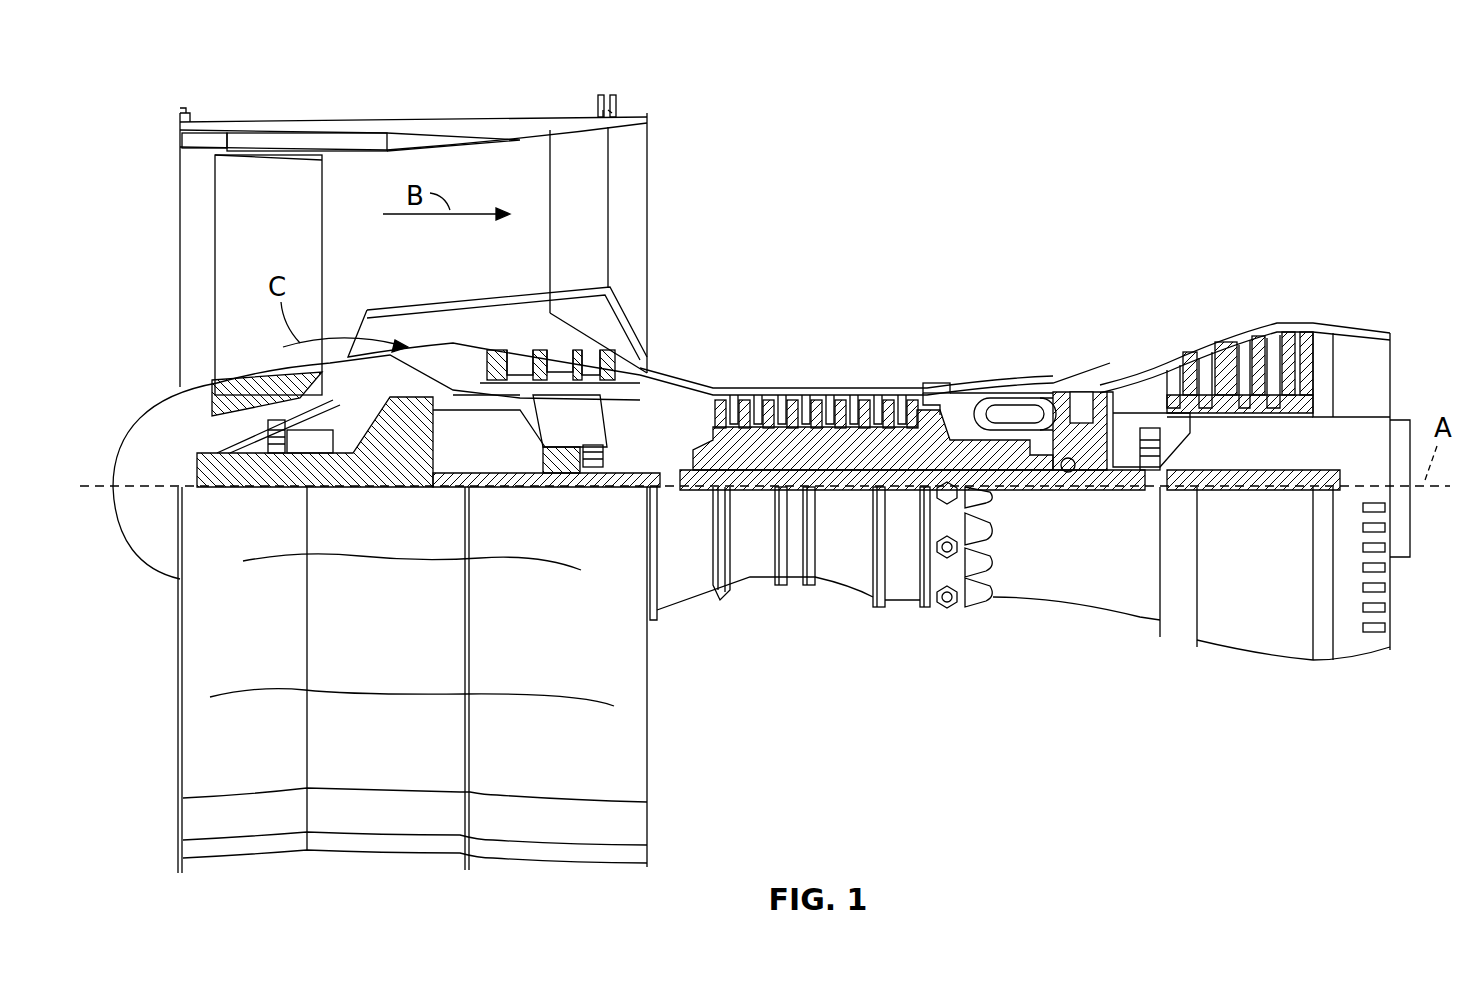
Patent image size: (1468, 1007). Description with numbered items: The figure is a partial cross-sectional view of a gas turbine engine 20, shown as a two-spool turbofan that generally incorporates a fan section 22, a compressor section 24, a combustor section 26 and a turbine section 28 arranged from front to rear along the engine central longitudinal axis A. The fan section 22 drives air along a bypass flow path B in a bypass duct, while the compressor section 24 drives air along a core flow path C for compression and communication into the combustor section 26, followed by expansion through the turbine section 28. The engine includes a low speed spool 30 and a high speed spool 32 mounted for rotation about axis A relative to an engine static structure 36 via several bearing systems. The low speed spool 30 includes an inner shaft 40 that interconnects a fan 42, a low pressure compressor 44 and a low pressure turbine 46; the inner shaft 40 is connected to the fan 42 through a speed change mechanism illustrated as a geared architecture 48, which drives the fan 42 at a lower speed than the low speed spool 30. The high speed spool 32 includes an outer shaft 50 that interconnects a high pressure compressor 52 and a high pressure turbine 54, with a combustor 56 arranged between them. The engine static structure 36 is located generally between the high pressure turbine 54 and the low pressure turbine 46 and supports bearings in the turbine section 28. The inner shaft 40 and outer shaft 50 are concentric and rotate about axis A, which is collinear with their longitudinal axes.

The gas turbine engine 20 is at (1258, 168).
The fan section 22 is at (280, 120).
The compressor section 24 is at (871, 288).
The combustor section 26 is at (971, 324).
The turbine section 28 is at (1164, 324).
The low speed spool 30 is at (855, 495).
The high speed spool 32 is at (900, 448).
The engine static structure 36 is at (905, 604).
The inner shaft 40 is at (675, 490).
The fan 42 is at (254, 259).
The low pressure compressor 44 is at (560, 355).
The low pressure turbine 46 is at (1245, 347).
The geared architecture 48 is at (425, 462).
The outer shaft 50 is at (1073, 478).
The high pressure compressor 52 is at (812, 450).
The high pressure turbine 54 is at (1077, 385).
The combustor 56 is at (1007, 410).